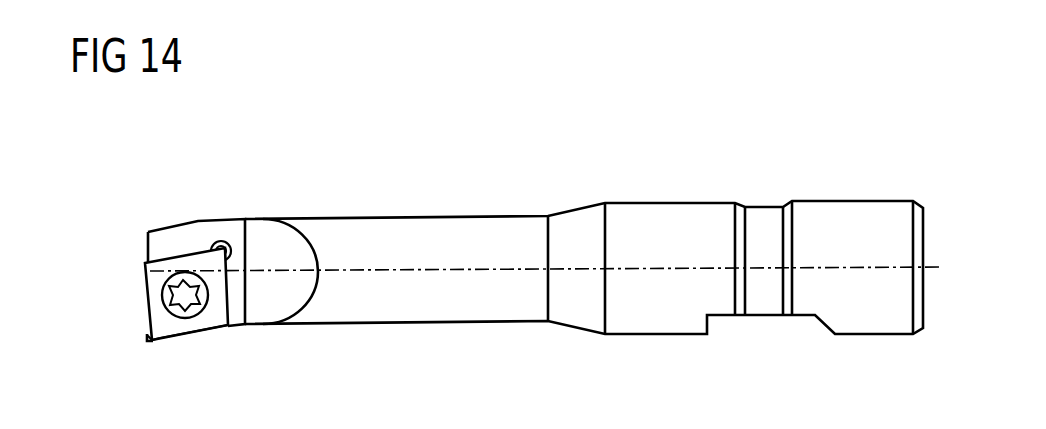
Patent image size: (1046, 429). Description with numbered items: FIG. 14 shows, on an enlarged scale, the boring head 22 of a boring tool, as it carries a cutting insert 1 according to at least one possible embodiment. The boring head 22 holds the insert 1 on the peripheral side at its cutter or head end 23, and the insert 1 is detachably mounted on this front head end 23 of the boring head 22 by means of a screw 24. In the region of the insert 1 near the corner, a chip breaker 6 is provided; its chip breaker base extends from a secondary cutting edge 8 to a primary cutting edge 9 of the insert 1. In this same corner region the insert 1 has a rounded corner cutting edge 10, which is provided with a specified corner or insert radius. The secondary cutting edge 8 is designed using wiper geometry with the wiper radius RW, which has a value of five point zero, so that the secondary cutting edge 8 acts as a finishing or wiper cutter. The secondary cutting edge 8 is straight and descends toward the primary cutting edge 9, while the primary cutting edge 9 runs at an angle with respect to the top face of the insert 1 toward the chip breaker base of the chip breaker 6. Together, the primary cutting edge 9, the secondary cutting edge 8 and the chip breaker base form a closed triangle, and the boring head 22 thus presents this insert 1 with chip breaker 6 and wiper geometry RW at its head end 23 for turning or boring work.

The insert 1 is at (157, 287).
The chip breaker 6 is at (152, 347).
The secondary cutting edge 8 is at (145, 307).
The primary cutting edge 9 is at (174, 338).
The corner cutting edge 10 is at (148, 345).
The boring head 22 is at (433, 237).
The head end 23 is at (148, 230).
The screw 24 is at (198, 258).
The wiper radius RW is at (148, 334).